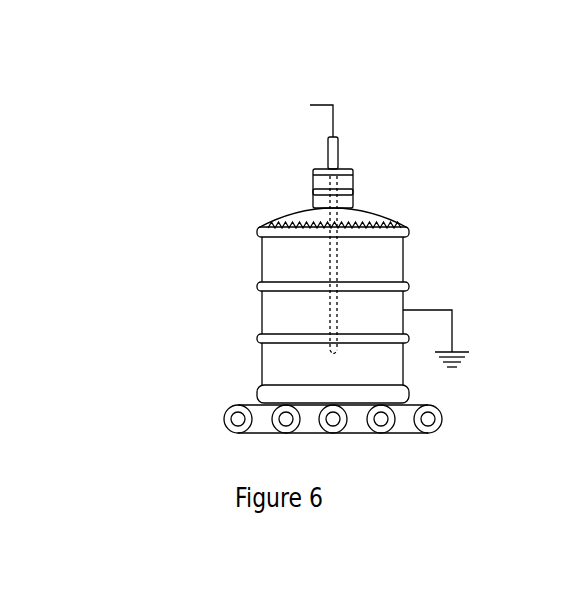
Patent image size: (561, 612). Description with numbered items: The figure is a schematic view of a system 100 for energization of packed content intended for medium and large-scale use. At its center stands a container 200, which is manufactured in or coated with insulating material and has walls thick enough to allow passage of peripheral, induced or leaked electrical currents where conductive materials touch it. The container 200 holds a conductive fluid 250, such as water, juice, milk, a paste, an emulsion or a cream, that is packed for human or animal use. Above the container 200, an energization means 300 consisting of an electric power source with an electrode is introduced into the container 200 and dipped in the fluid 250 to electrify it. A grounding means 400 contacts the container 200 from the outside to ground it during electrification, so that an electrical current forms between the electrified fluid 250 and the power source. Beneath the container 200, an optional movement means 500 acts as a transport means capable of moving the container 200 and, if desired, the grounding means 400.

The system for energization of packed content 100 is at (219, 120).
The container 200 is at (258, 285).
The fluid 250 is at (392, 263).
The energization means 300 is at (335, 120).
The grounding means 400 is at (456, 330).
The movement means 500 is at (228, 405).